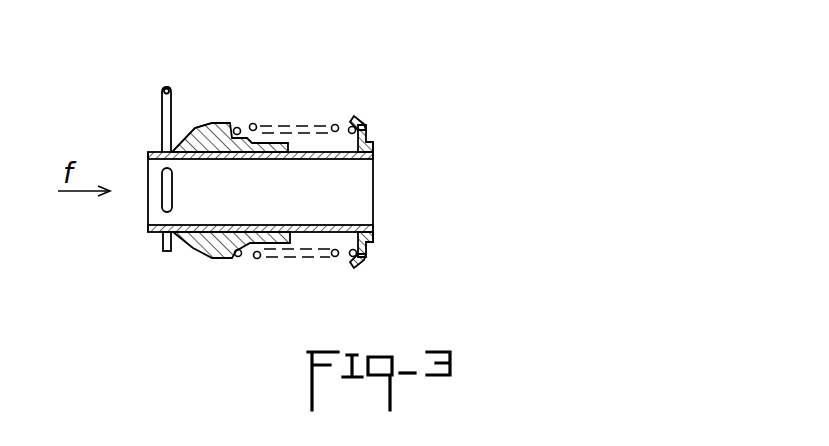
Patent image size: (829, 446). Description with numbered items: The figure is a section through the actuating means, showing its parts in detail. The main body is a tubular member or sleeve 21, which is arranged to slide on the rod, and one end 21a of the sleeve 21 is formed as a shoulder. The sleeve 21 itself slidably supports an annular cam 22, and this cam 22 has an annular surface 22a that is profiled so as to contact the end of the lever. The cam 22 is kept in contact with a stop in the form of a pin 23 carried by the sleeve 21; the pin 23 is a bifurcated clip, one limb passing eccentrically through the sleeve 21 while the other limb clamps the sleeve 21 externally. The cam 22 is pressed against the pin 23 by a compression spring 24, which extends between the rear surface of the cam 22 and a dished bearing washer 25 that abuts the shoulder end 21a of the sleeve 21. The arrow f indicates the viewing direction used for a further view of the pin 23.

The sleeve 21 is at (307, 153).
The end of the sleeve 21a is at (367, 147).
The annular cam 22 is at (212, 131).
The annular surface 22a is at (190, 120).
The pin 23 is at (165, 88).
The compression spring 24 is at (255, 126).
The dished bearing washer 25 is at (355, 124).